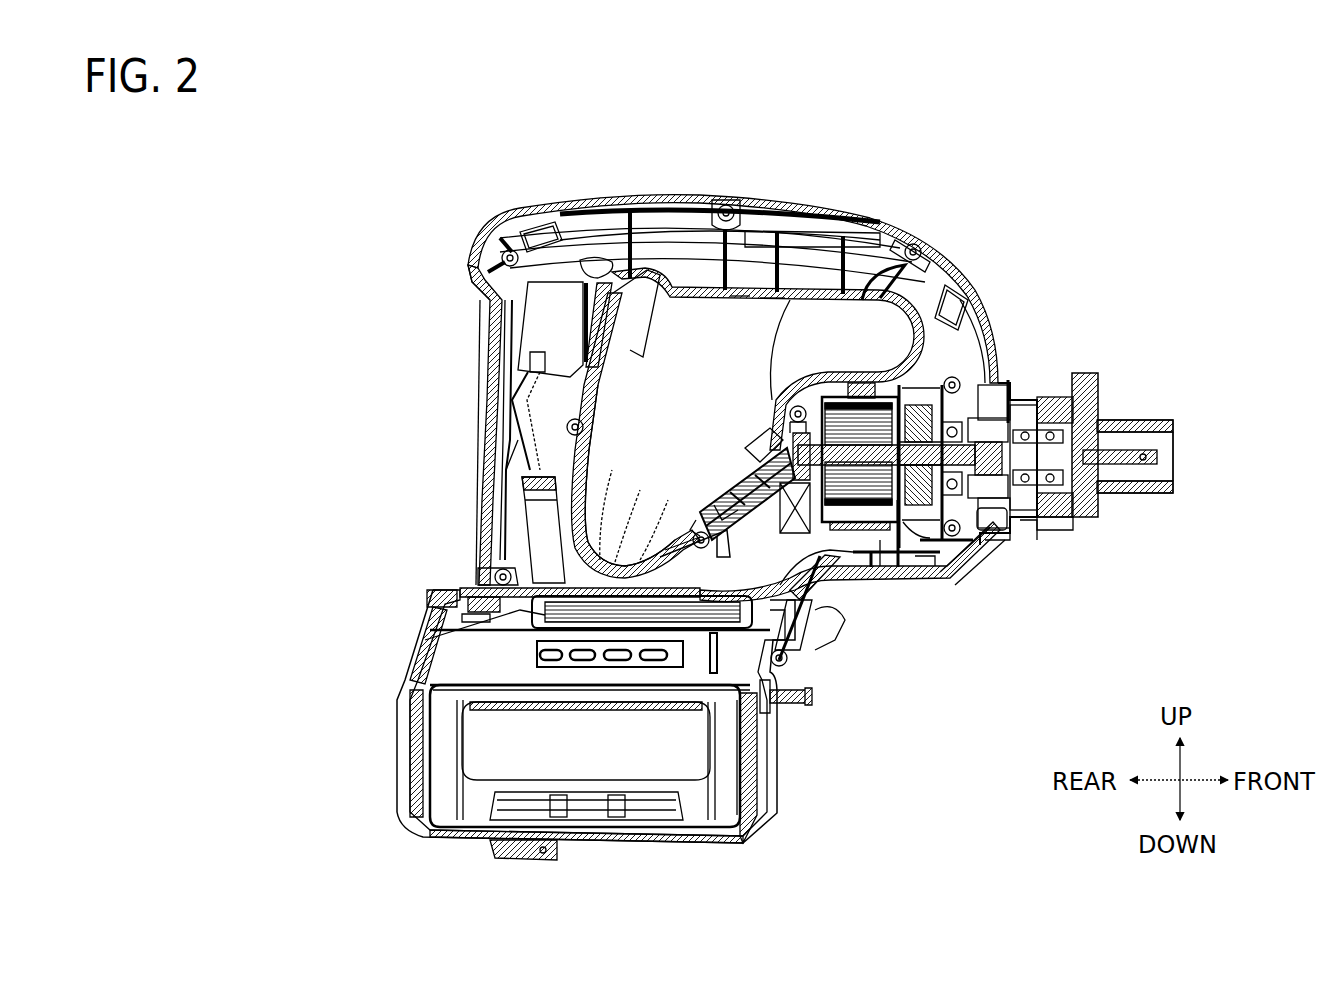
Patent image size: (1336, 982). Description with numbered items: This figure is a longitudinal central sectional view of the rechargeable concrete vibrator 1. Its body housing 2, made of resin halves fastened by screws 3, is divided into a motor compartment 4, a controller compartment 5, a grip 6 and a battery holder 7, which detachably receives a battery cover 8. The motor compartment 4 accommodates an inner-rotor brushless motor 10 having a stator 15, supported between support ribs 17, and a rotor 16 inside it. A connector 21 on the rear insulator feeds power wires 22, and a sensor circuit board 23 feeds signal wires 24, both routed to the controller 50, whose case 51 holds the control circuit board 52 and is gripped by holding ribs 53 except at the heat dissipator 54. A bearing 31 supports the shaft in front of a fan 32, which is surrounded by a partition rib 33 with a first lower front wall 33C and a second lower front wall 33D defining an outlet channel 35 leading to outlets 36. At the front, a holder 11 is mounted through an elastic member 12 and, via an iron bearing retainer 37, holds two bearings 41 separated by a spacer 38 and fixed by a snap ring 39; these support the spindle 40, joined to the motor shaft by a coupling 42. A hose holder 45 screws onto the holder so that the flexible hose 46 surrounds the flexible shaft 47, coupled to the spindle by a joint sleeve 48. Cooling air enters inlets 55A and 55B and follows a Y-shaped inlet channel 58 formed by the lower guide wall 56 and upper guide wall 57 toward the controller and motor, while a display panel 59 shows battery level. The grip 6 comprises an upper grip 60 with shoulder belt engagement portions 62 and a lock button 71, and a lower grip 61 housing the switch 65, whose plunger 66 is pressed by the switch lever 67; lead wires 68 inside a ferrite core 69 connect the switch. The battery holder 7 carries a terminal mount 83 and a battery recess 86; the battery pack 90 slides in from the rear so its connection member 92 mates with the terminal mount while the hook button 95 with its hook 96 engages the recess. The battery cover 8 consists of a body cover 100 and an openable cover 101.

The concrete vibrator 1 is at (488, 216).
The body housing 2 is at (490, 398).
The screws 3 is at (510, 248).
The motor compartment 4 is at (741, 300).
The controller compartment 5 is at (596, 530).
The grip 6 is at (600, 188).
The battery holder 7 is at (470, 586).
The battery cover 8 is at (405, 680).
The motor 10 is at (840, 400).
The holder 11 is at (1015, 395).
The elastic member 12 is at (1020, 552).
The stator 15 is at (803, 392).
The rotor 16 is at (762, 440).
The support ribs 17 is at (860, 400).
The connector 21 is at (880, 582).
The power wires 22 is at (716, 480).
The sensor circuit board 23 is at (772, 305).
The signal wires 24 is at (705, 500).
The bearing 31 is at (1000, 535).
The fan 32 is at (876, 378).
The partition rib 33 is at (922, 300).
The first lower front wall 33C is at (988, 578).
The second lower front wall 33D is at (922, 592).
The outlet channel 35 is at (935, 580).
The outlets 36 is at (920, 572).
The bearing retainer 37 is at (1062, 532).
The spacer 38 is at (1042, 540).
The snap ring 39 is at (1020, 542).
The spindle 40 is at (1110, 497).
The bearings 41 is at (1048, 397).
The coupling 42 is at (1012, 385).
The hose holder 45 is at (1083, 373).
The flexible hose 46 is at (1180, 433).
The flexible shaft 47 is at (1150, 455).
The joint sleeve 48 is at (1085, 445).
The controller 50 is at (618, 540).
The case 51 is at (610, 562).
The control circuit board 52 is at (645, 552).
The holding ribs 53 is at (522, 505).
The heat dissipator 54 is at (660, 678).
The inlets 55A is at (830, 588).
The inlets 55B is at (800, 645).
The lower guide wall 56 is at (810, 697).
The upper guide wall 57 is at (760, 458).
The inlet channel 58 is at (838, 604).
The display panel 59 is at (742, 490).
The upper grip 60 is at (690, 212).
The lower grip 61 is at (485, 372).
The shoulder belt engagement portions 62 is at (540, 228).
The switch 65 is at (540, 335).
The plunger 66 is at (530, 298).
The switch lever 67 is at (645, 320).
The lead wires 68 is at (505, 445).
The ferrite core 69 is at (505, 475).
The lock button 71 is at (632, 245).
The terminal mount 83 is at (612, 668).
The battery recess 86 is at (478, 598).
The battery pack 90 is at (425, 648).
The connection member 92 is at (584, 675).
The hook button 95 is at (455, 625).
The hook 96 is at (465, 605).
The body cover 100 is at (760, 828).
The openable cover 101 is at (400, 740).